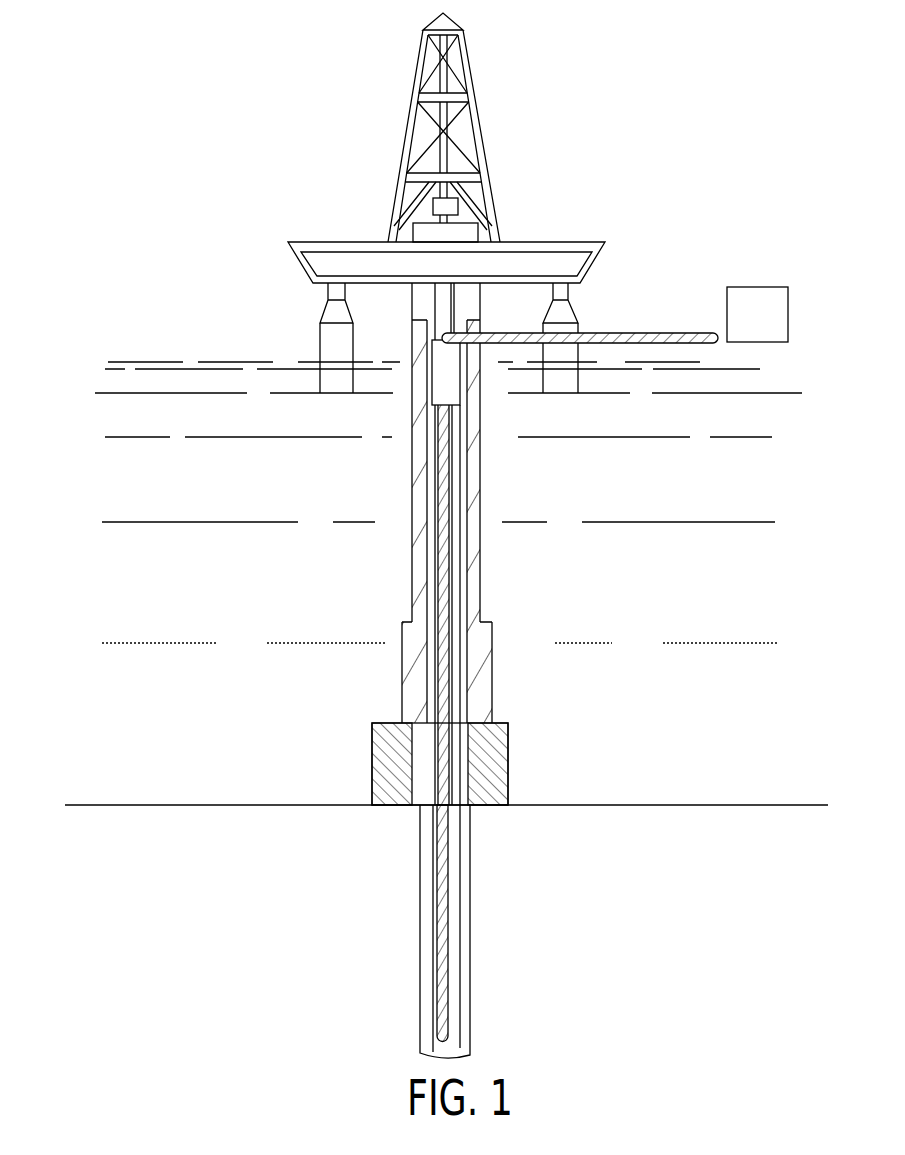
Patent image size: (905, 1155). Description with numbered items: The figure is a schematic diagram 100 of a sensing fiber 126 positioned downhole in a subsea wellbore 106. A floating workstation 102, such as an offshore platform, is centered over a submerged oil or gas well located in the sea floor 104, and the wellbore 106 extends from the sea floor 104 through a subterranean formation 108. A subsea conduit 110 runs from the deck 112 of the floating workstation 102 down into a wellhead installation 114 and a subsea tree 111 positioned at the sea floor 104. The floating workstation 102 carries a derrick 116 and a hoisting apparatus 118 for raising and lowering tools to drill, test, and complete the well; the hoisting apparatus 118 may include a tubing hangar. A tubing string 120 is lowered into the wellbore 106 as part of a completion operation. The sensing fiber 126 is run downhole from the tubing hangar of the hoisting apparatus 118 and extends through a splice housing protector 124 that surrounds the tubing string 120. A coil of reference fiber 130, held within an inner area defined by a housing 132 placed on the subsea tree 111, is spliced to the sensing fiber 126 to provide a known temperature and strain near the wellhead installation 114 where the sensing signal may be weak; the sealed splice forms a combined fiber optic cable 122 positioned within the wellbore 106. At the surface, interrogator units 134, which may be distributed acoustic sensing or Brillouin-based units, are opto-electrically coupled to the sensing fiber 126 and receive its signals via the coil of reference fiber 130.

The schematic diagram 100 is at (181, 83).
The floating workstation 102 is at (328, 345).
The sea floor 104 is at (762, 803).
The wellbore 106 is at (472, 1010).
The subterranean formation 108 is at (726, 934).
The subsea conduit 110 is at (410, 588).
The subsea tree 111 is at (490, 782).
The deck 112 is at (318, 246).
The wellhead installation 114 is at (402, 695).
The derrick 116 is at (471, 127).
The hoisting apparatus 118 is at (453, 218).
The tubing string 120 is at (467, 565).
The combined fiber optic cable 122 is at (453, 302).
The splice housing protector 124 is at (433, 388).
The sensing fiber 126 is at (440, 977).
The coil of reference fiber 130 is at (429, 757).
The housing 132 is at (407, 795).
The interrogator units 134 is at (760, 276).